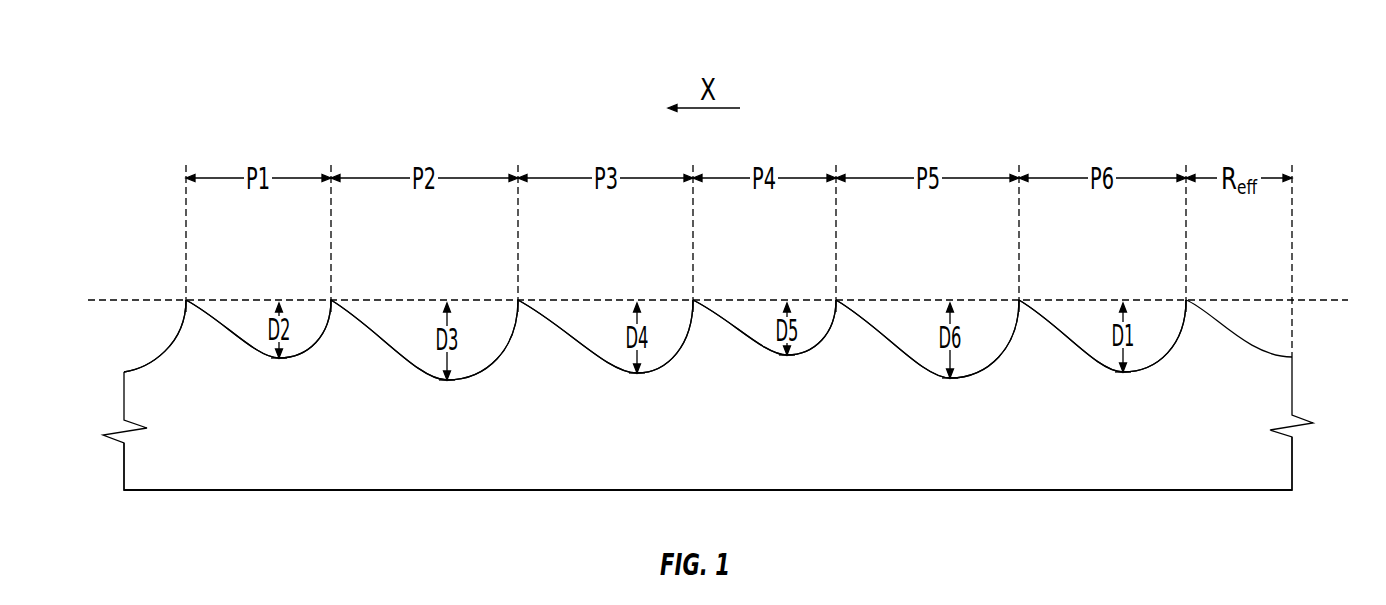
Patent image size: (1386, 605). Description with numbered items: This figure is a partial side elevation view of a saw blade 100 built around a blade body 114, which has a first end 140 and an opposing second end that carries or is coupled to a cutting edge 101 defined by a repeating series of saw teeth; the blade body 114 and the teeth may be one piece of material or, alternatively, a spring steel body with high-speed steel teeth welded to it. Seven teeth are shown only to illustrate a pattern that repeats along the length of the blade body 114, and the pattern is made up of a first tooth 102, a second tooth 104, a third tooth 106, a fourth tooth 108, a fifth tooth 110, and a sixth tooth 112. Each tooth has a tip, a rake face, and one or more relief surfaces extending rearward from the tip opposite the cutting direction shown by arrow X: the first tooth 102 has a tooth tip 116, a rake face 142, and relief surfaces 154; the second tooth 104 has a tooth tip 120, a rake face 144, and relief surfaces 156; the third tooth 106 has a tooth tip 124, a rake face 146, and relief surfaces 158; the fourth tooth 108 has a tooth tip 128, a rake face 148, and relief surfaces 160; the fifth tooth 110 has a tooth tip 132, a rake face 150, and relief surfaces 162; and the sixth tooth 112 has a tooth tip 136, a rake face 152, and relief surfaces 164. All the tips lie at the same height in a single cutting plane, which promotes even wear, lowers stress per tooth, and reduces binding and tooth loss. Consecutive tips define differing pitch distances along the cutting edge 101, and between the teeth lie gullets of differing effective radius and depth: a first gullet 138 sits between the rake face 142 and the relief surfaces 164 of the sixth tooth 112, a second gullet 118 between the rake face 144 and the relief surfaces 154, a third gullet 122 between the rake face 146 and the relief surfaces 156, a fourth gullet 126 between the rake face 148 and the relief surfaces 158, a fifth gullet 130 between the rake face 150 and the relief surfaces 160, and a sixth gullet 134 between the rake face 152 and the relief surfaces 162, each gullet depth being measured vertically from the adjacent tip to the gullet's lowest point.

The saw blade 100 is at (1132, 76).
The cutting edge 101 is at (736, 300).
The first tooth 102 is at (189, 375).
The second tooth 104 is at (336, 373).
The third tooth 106 is at (524, 378).
The fourth tooth 108 is at (699, 375).
The fifth tooth 110 is at (844, 381).
The sixth tooth 112 is at (1027, 378).
The blade body 114 is at (771, 465).
The tooth tip 116 is at (186, 300).
The second gullet 118 is at (280, 360).
The tooth tip 120 is at (331, 300).
The third gullet 122 is at (443, 382).
The tooth tip 124 is at (518, 300).
The fourth gullet 126 is at (638, 377).
The tooth tip 128 is at (693, 300).
The fifth gullet 130 is at (788, 360).
The tooth tip 132 is at (836, 300).
The sixth gullet 134 is at (963, 378).
The tooth tip 136 is at (1019, 300).
The first gullet 138 is at (1123, 373).
The first end 140 is at (973, 492).
The rake face 142 is at (177, 331).
The rake face 144 is at (328, 323).
The rake face 146 is at (515, 333).
The rake face 148 is at (693, 333).
The rake face 150 is at (833, 300).
The rake face 152 is at (990, 320).
The relief surfaces 154 is at (207, 310).
The relief surfaces 156 is at (370, 317).
The relief surfaces 158 is at (552, 317).
The relief surfaces 160 is at (718, 315).
The relief surfaces 162 is at (877, 317).
The relief surfaces 164 is at (1062, 325).